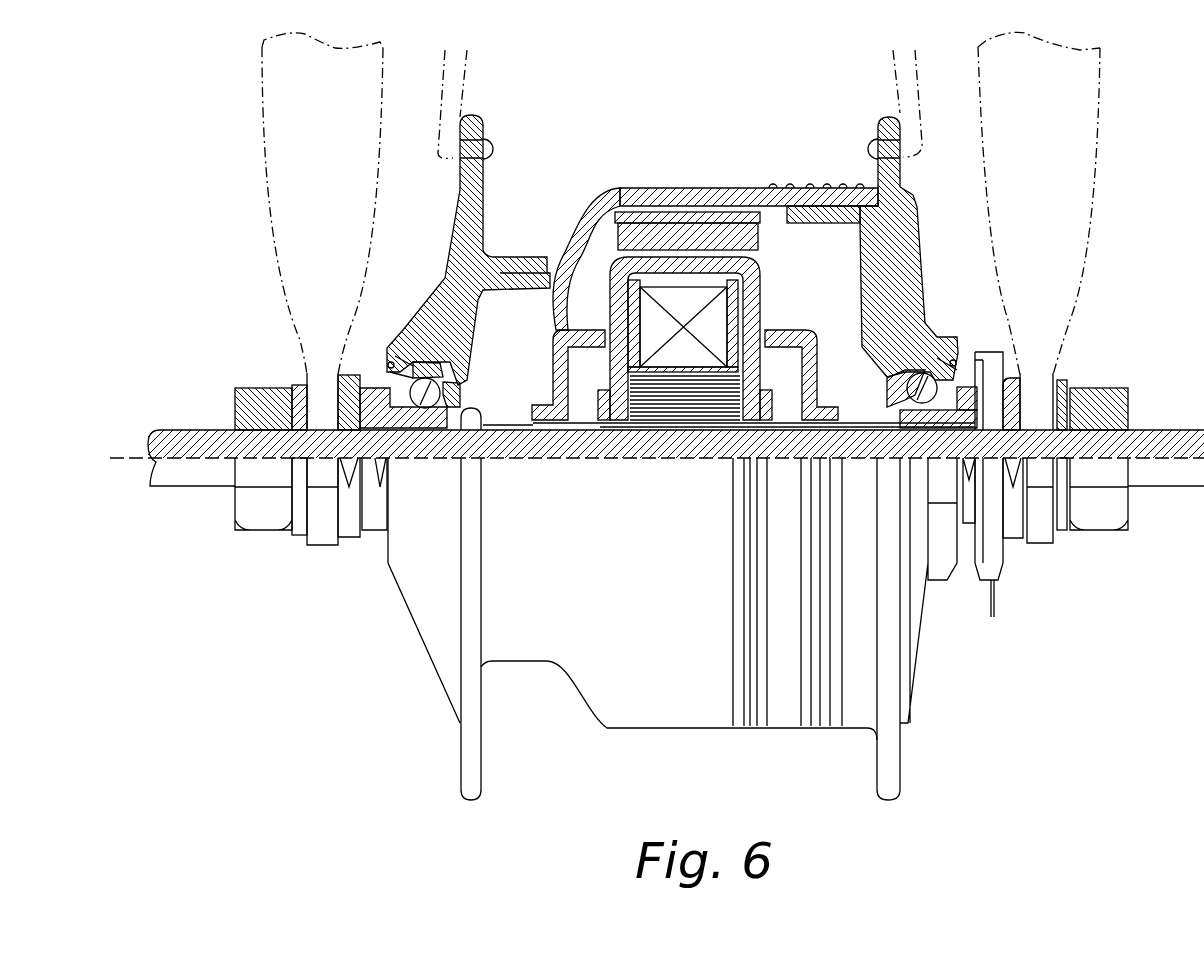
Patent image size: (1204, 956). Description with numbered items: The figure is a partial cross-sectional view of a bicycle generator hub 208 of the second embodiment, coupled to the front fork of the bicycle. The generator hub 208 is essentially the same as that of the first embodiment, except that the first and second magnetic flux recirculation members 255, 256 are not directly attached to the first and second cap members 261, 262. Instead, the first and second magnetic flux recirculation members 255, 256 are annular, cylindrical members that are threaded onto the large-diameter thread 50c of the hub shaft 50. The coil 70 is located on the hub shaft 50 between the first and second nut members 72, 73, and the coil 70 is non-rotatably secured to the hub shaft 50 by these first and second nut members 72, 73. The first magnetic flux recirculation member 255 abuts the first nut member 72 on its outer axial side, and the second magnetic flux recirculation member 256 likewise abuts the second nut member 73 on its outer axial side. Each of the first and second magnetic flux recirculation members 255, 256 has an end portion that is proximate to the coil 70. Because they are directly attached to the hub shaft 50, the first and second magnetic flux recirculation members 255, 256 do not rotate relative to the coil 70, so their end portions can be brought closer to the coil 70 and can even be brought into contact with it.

The hub shaft 50 is at (177, 440).
The large-diameter thread 50c is at (458, 413).
The first cap member 261 is at (428, 306).
The second cap member 262 is at (973, 282).
The first magnetic flux recirculation member 255 is at (587, 200).
The coil 70 is at (677, 247).
The second magnetic flux recirculation member 256 is at (803, 405).
The first nut member 72 is at (587, 420).
The second nut member 73 is at (733, 420).
The bicycle generator hub 208 is at (630, 736).